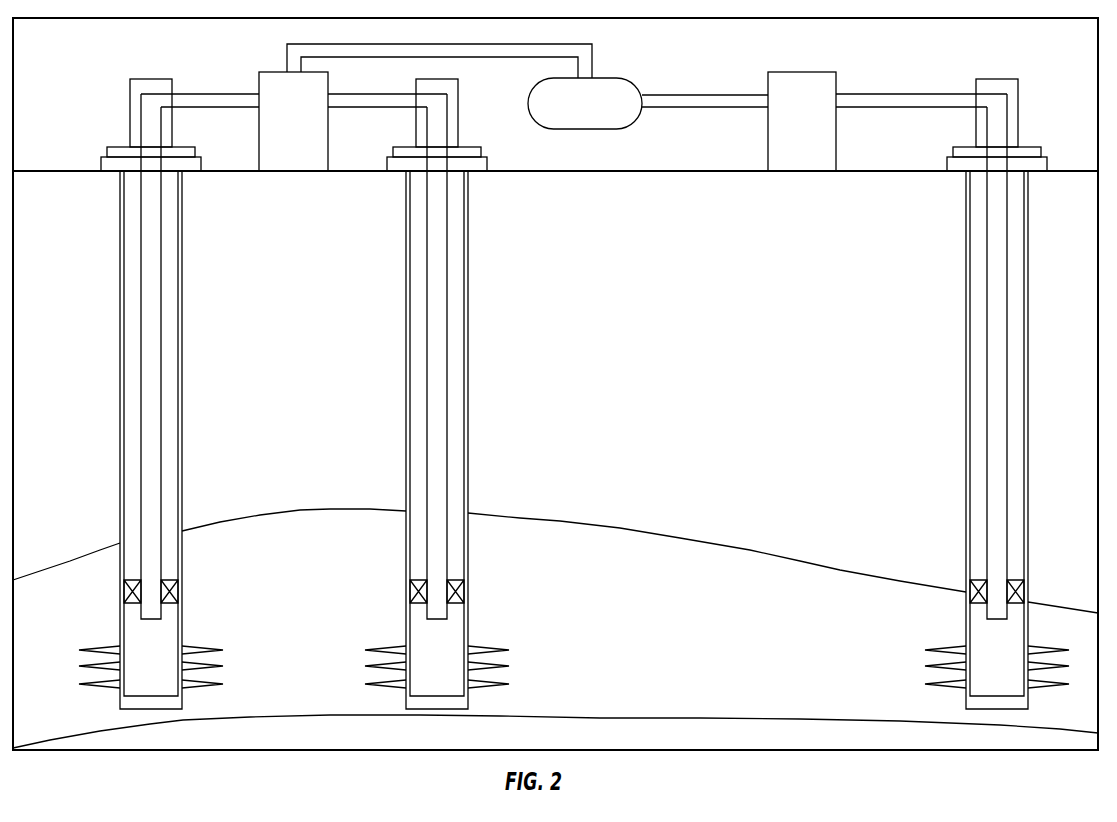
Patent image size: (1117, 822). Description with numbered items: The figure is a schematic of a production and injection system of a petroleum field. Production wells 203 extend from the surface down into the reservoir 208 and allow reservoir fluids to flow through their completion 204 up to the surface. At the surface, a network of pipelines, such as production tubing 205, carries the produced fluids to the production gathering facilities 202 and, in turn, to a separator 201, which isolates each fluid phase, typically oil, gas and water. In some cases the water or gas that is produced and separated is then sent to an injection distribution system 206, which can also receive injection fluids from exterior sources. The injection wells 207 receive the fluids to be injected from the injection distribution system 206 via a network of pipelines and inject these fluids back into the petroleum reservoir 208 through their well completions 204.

The separator 201 is at (753, 37).
The production gathering facilities 202 is at (340, 242).
The production wells 203 is at (405, 369).
The completion 204 is at (364, 662).
The production tubing 205 is at (550, 336).
The injection distribution system 206 is at (735, 215).
The injection wells 207 is at (870, 370).
The reservoir 208 is at (637, 605).